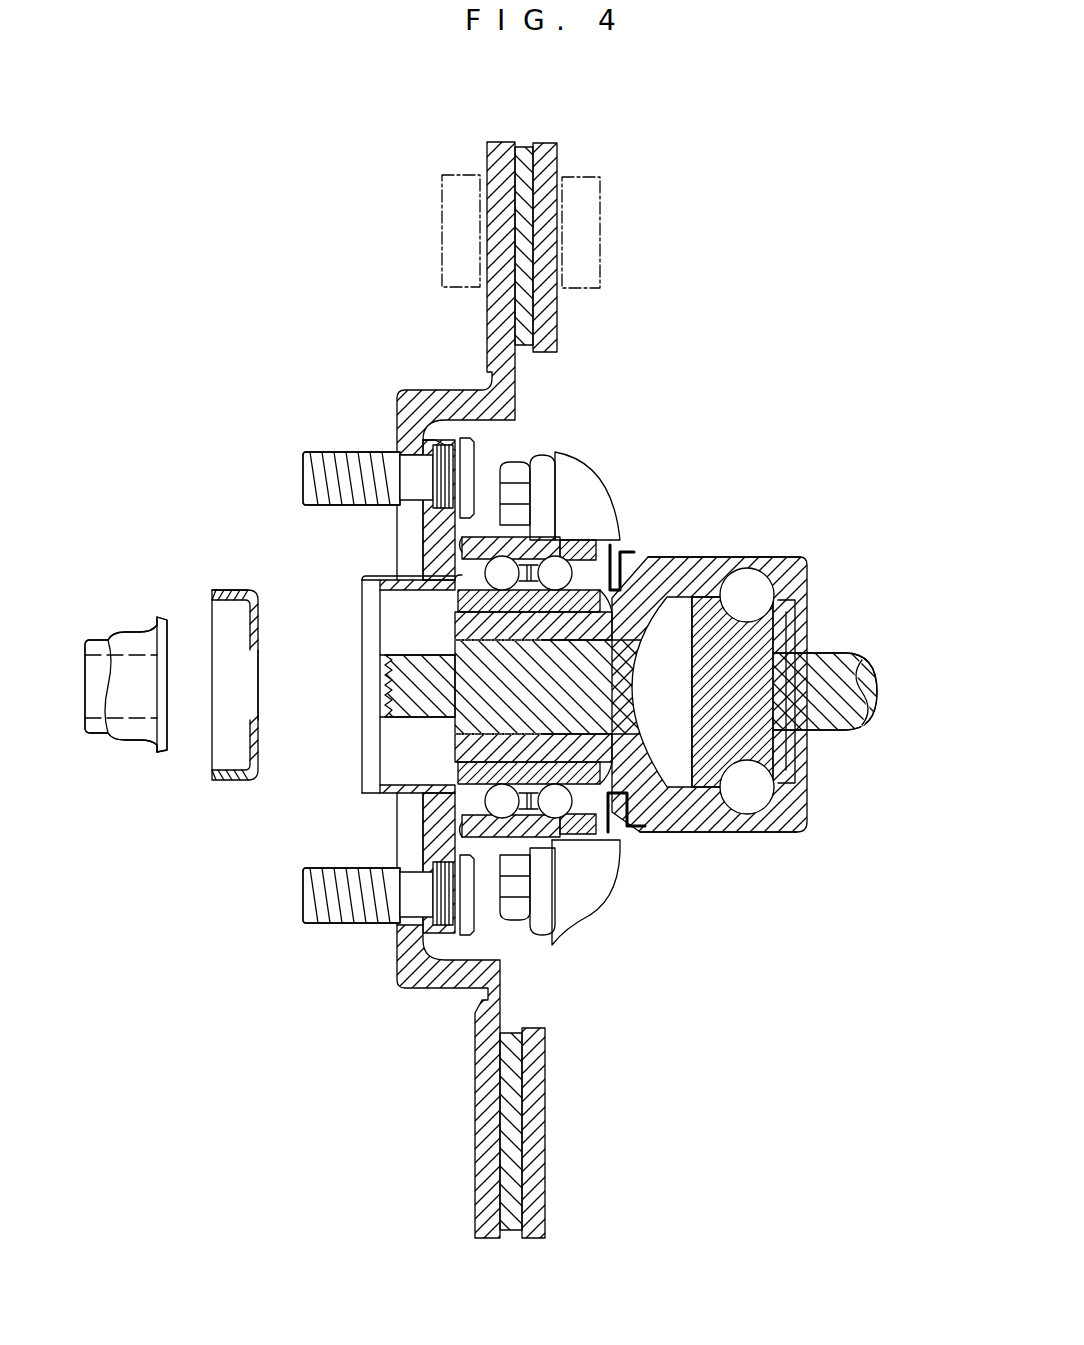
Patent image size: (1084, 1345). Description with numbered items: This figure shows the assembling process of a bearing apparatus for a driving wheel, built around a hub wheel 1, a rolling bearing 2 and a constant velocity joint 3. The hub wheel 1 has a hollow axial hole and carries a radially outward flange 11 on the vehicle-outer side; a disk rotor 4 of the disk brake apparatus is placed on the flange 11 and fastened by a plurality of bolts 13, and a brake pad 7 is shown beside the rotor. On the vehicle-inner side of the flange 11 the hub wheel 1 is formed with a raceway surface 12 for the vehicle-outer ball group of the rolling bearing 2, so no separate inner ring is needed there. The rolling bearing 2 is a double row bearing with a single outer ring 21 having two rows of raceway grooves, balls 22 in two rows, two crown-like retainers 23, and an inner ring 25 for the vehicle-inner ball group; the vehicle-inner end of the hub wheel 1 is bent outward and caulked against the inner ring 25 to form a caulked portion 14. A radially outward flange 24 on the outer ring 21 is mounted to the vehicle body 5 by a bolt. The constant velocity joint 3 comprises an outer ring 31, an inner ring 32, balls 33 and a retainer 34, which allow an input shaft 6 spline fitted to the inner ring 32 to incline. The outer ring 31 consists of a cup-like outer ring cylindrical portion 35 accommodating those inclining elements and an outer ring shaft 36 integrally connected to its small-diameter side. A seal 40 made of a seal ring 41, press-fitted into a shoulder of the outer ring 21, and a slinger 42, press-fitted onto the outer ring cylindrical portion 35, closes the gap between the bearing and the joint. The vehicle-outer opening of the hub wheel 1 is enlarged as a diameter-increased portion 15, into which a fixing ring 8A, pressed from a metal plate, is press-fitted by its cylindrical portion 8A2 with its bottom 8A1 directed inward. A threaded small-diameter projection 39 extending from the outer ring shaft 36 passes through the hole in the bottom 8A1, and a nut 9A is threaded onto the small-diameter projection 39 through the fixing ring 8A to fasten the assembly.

The hub wheel 1 is at (358, 803).
The rolling bearing 2 is at (494, 524).
The constant velocity joint 3 is at (765, 551).
The disk rotor 4 is at (503, 146).
The vehicle body 5 is at (588, 470).
The input shaft 6 is at (872, 705).
The brake pad 7 is at (583, 176).
The fixing ring 8A is at (220, 797).
The bottom 8A1 is at (260, 752).
The cylindrical portion 8A2 is at (236, 588).
The nut 9A is at (134, 762).
The flange 11 is at (430, 540).
The raceway surface 12 is at (380, 590).
The bolts 13 is at (342, 456).
The caulked portion 14 is at (636, 566).
The diameter-increased portion 15 is at (380, 770).
The outer ring 21 is at (556, 530).
The balls 22 is at (465, 560).
The crown-like retainers 23 is at (522, 590).
The radially outward flange 24 is at (540, 462).
The inner ring 25 is at (618, 555).
The outer ring 31 is at (790, 560).
The inner ring 32 is at (760, 640).
The balls 33 is at (758, 592).
The retainer 34 is at (796, 600).
The outer ring cylindrical portion 35 is at (745, 835).
The outer ring shaft 36 is at (622, 810).
The small-diameter projection 39 is at (385, 690).
The seal 40 is at (605, 930).
The seal ring 41 is at (580, 905).
The slinger 42 is at (604, 875).